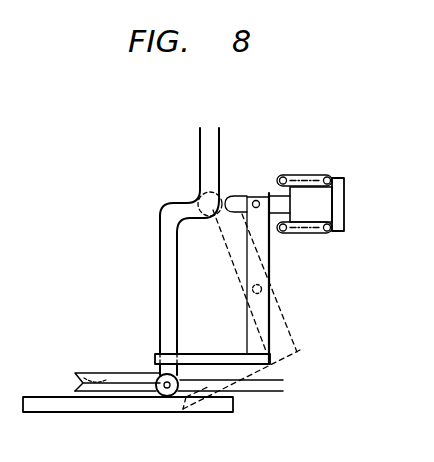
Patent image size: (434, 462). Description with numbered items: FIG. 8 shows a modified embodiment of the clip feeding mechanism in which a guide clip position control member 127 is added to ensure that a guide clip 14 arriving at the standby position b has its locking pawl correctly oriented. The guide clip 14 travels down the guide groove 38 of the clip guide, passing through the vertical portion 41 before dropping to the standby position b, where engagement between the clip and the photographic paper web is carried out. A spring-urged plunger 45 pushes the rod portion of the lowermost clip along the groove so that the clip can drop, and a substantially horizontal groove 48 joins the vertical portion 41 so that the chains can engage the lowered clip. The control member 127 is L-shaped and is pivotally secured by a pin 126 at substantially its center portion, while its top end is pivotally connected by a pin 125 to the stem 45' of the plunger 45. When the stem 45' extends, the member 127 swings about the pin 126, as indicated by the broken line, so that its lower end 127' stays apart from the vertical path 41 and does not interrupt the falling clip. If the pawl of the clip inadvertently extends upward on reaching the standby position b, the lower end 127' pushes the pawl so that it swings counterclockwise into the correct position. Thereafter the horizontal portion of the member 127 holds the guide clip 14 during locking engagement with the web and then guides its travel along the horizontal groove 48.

The guide groove 38 is at (221, 139).
The vertical portion 41 is at (161, 287).
The plunger 45 is at (310, 185).
The stem 45' is at (257, 175).
The pin 125 is at (256, 200).
The pin 126 is at (262, 289).
The guide clip position control member 127 is at (292, 278).
The lower end 127' is at (212, 340).
The horizontal groove 48 is at (270, 393).
The guide clip 14 is at (126, 372).
The standby position b is at (45, 397).